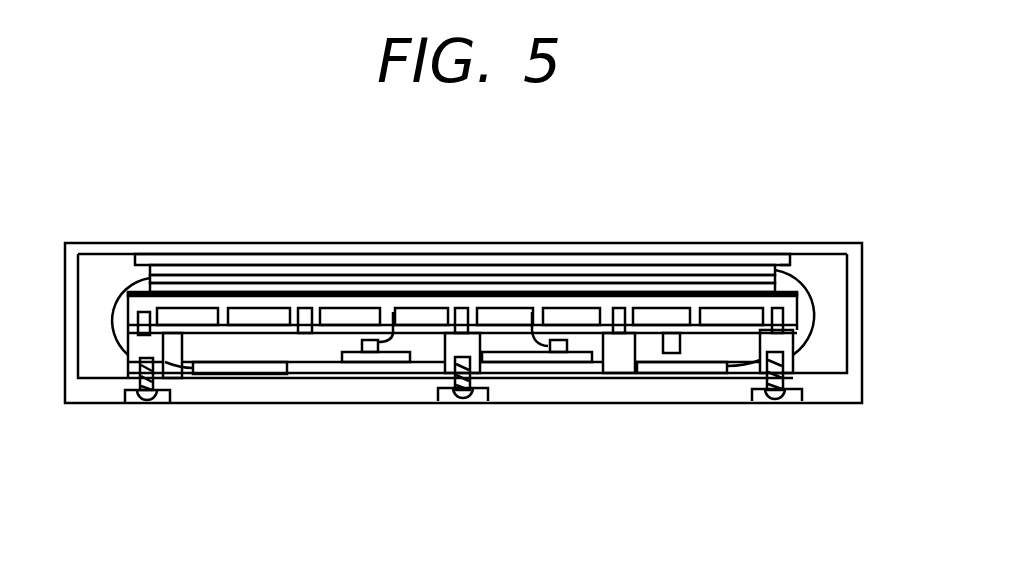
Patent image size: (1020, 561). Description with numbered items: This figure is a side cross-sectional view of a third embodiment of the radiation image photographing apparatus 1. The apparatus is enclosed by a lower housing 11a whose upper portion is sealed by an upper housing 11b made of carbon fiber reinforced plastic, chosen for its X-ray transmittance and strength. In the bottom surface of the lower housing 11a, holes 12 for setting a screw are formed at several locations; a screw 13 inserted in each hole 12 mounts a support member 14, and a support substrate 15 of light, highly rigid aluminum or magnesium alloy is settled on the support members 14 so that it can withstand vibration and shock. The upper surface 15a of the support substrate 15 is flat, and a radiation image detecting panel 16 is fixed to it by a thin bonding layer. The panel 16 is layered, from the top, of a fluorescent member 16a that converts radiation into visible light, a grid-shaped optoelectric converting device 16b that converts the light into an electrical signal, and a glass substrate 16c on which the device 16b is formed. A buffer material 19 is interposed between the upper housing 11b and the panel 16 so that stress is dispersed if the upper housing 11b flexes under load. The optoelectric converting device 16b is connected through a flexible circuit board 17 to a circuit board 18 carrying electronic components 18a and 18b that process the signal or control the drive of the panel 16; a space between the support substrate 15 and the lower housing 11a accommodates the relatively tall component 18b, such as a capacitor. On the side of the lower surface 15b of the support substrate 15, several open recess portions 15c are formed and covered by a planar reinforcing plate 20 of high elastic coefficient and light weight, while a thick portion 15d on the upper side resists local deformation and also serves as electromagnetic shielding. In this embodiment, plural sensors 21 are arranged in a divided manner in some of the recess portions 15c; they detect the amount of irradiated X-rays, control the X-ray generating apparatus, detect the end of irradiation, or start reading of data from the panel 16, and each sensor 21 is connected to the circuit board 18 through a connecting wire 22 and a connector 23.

The radiation image photographing apparatus 1 is at (703, 243).
The lower housing 11a is at (840, 388).
The upper housing 11b is at (830, 248).
The hole for setting a screw 12 is at (792, 385).
The screw 13 is at (778, 392).
The support member 14 is at (622, 365).
The support substrate 15 is at (182, 300).
The upper surface 15a is at (441, 292).
The lower surface 15b is at (228, 333).
The recess portion 15c is at (272, 318).
The thick portion 15d is at (350, 305).
The radiation image detecting panel 16 is at (349, 263).
The fluorescent member 16a is at (172, 262).
The optoelectric converting device 16b is at (238, 272).
The substrate 16c is at (300, 280).
The flexible circuit board 17 is at (128, 318).
The circuit board 18 is at (526, 364).
The electronic component 18a is at (500, 363).
The electronic component 18b is at (672, 352).
The buffer material 19 is at (635, 256).
The reinforcing plate 20 is at (648, 330).
The sensor 21 is at (503, 310).
The connecting wire 22 is at (548, 345).
The connector 23 is at (560, 352).